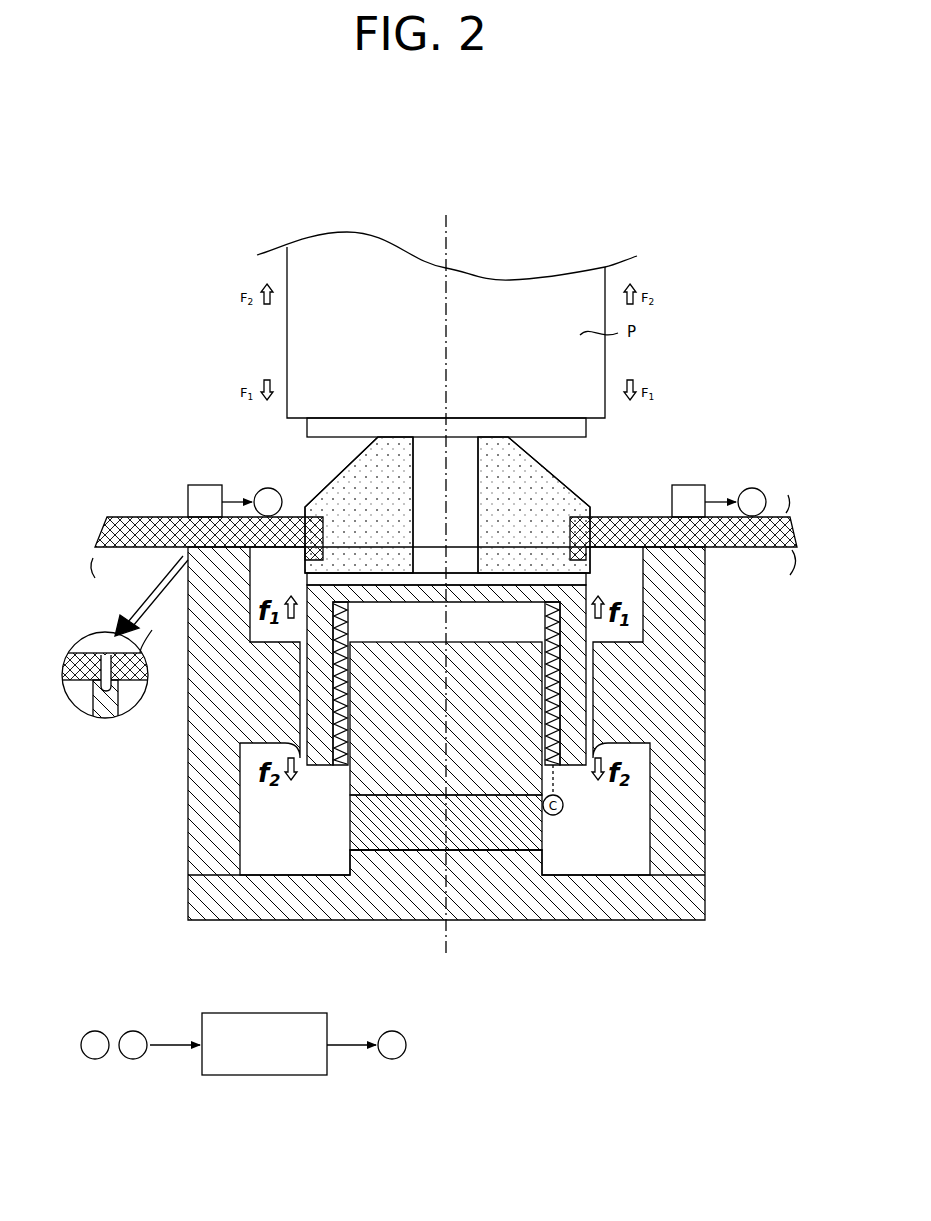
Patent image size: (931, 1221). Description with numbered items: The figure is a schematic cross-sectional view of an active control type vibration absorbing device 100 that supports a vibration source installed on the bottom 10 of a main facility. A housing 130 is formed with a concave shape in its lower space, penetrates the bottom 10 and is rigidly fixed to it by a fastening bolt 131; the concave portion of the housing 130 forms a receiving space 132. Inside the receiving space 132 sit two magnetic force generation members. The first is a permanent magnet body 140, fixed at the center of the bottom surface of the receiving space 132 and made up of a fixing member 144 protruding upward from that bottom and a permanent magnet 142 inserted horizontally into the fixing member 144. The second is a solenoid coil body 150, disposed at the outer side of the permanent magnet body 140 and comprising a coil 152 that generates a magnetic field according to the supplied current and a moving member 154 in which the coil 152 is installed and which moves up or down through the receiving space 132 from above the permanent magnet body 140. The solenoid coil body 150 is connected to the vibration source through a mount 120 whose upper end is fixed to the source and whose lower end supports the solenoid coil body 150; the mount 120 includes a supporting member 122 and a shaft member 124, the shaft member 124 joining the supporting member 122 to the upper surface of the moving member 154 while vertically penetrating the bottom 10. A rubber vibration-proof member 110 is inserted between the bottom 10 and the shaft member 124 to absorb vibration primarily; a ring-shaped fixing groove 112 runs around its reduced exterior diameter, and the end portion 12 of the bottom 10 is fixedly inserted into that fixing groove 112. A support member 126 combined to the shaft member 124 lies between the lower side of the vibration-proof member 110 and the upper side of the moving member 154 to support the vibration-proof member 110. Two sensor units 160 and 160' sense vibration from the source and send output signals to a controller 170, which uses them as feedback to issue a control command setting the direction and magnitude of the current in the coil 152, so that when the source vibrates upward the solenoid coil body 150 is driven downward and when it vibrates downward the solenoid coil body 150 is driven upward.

The vibration absorbing device 100 is at (112, 316).
The bottom 10 is at (107, 517).
The end portion 12 is at (622, 517).
The vibration-proof member 110 is at (528, 455).
The fixing groove 112 is at (555, 507).
The mount 120 is at (196, 393).
The supporting member 122 is at (307, 428).
The shaft member 124 is at (427, 463).
The support member 126 is at (587, 580).
The housing 130 is at (188, 752).
The fastening bolt 131 is at (98, 653).
The receiving space 132 is at (261, 832).
The permanent magnet body 140 is at (770, 808).
The permanent magnet 142 is at (542, 840).
The fixing member 144 is at (542, 865).
The solenoid coil body 150 is at (770, 620).
The coil 152 is at (590, 645).
The moving member 154 is at (563, 683).
The sensor unit 160 is at (719, 479).
The sensor unit 160' is at (202, 500).
The controller 170 is at (222, 1013).